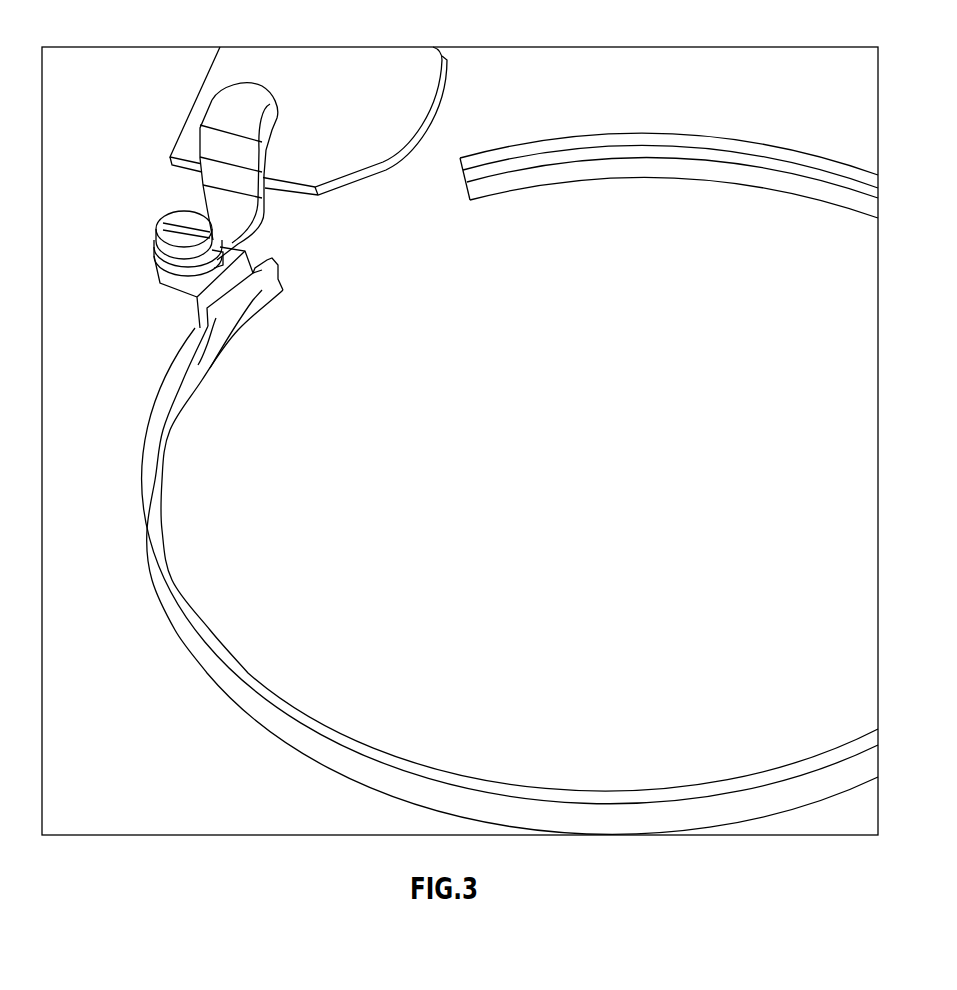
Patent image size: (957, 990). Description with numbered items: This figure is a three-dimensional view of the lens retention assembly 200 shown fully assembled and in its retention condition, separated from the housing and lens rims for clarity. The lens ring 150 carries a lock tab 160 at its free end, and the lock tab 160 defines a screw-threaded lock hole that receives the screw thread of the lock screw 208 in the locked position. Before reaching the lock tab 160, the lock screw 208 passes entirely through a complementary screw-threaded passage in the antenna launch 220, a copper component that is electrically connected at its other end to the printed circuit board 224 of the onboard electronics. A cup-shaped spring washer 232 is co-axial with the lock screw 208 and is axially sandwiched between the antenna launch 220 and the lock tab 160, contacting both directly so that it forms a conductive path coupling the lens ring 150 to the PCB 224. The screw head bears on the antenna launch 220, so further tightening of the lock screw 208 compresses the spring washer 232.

The lens retention assembly 200 is at (757, 35).
The printed circuit board 224 is at (361, 142).
The lock screw 208 is at (185, 215).
The antenna launch 220 is at (158, 236).
The spring washer 232 is at (195, 293).
The lock tab 160 is at (250, 258).
The lens ring 150 is at (745, 190).